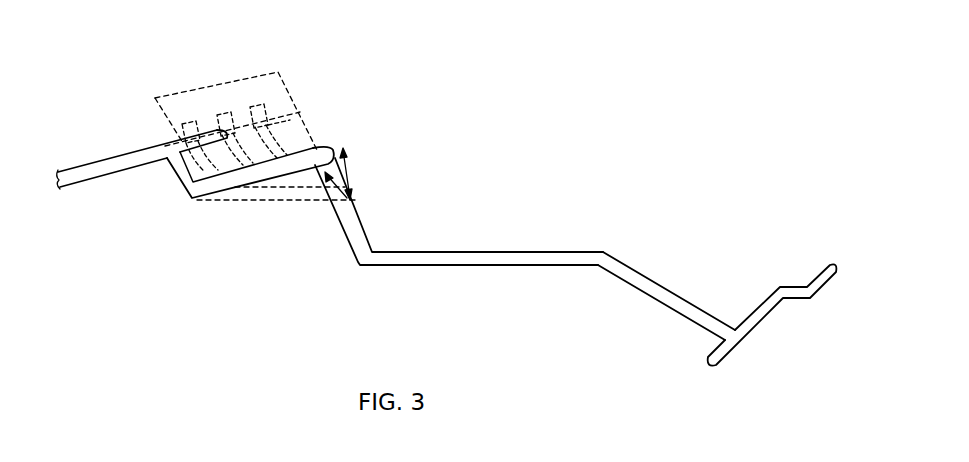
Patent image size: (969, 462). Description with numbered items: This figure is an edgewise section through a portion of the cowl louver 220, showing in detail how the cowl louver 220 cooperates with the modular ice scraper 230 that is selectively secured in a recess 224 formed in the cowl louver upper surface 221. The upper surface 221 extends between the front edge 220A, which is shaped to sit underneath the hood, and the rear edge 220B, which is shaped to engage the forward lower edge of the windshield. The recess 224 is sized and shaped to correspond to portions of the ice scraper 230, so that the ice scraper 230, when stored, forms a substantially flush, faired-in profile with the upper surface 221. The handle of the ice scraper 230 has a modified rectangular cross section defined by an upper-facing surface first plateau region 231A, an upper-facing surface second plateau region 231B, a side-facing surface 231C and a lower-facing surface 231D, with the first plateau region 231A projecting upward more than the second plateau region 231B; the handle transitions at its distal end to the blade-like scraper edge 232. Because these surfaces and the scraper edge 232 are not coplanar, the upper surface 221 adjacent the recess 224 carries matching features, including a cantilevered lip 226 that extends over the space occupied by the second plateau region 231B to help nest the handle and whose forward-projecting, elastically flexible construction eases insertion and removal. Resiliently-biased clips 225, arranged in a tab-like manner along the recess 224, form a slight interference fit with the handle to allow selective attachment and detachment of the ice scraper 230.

The cowl louver 220 is at (480, 108).
The front edge 220A is at (831, 264).
The rear edge 220B is at (65, 138).
The upper surface 221 is at (536, 252).
The recess 224 is at (238, 263).
The resiliently-biased clips 225 is at (336, 148).
The cantilevered lip 226 is at (214, 130).
The ice scraper 230 is at (333, 90).
The upper-facing surface first plateau region 231A is at (280, 110).
The upper-facing surface second plateau region 231B is at (210, 173).
The side-facing surface 231C is at (300, 128).
The lower-facing surface 231D is at (262, 162).
The scraper edge 232 is at (242, 78).